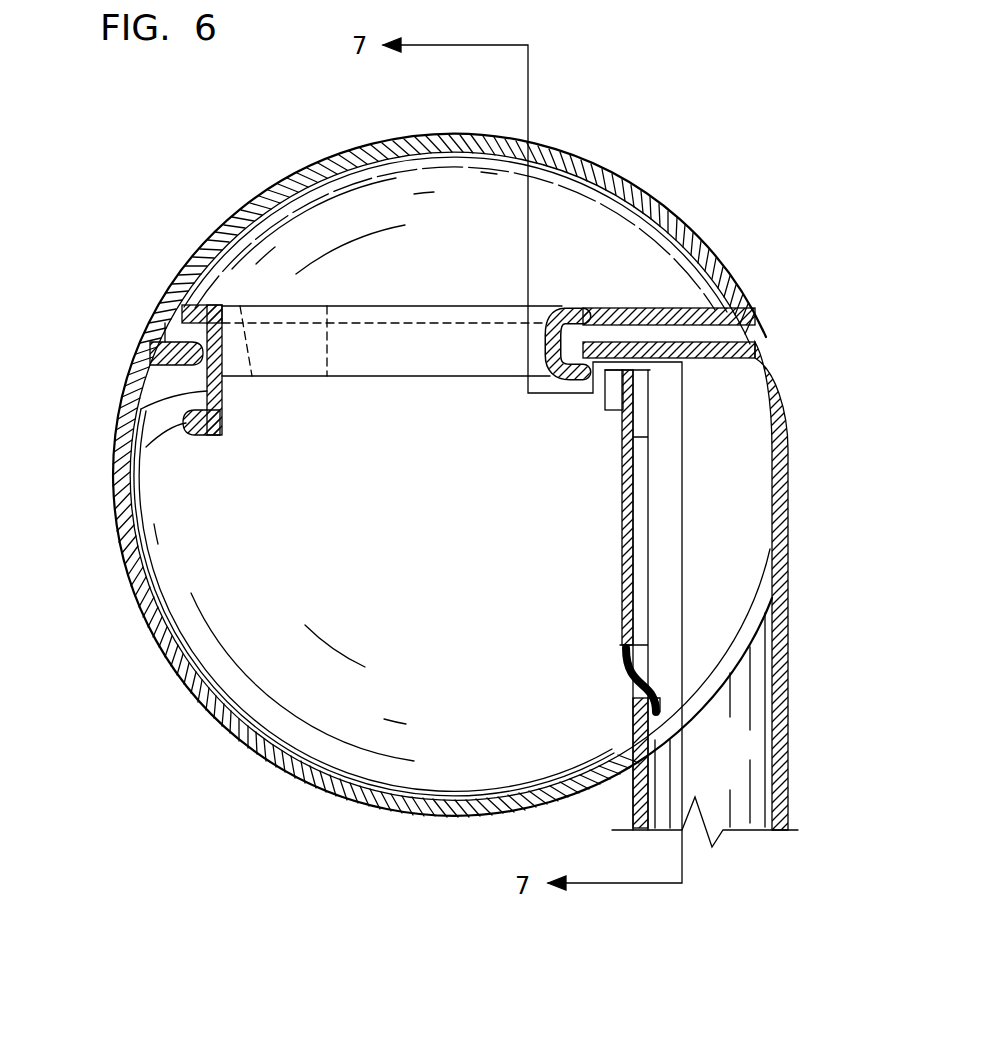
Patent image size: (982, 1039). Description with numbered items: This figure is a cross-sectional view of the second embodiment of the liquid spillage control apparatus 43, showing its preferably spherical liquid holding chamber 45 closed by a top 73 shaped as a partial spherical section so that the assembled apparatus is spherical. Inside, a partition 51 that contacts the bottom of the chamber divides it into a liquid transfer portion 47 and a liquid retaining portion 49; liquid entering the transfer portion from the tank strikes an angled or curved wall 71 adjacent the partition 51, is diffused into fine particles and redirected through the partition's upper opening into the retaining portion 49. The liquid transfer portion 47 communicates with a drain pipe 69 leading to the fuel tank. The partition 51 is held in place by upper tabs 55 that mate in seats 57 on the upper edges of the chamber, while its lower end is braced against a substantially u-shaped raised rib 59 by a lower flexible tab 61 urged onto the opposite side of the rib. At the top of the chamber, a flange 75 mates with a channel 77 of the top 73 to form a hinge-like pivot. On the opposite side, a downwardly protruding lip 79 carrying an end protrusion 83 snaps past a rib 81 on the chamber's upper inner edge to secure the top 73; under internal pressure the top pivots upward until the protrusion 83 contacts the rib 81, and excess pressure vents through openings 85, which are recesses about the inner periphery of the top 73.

The liquid spillage control apparatus 43 is at (157, 712).
The liquid holding chamber 45 is at (342, 797).
The liquid transfer portion 47 is at (753, 438).
The liquid retaining portion 49 is at (184, 562).
The partition 51 is at (623, 597).
The upper tabs 55 is at (623, 422).
The seats 57 is at (605, 403).
The raised rib 59 is at (638, 567).
The lower flexible tab 61 is at (658, 703).
The drain pipe 69 is at (760, 780).
The wall 71 is at (767, 368).
The top 73 is at (405, 137).
The flange 75 is at (591, 315).
The channel 77 is at (622, 337).
The lip 79 is at (198, 390).
The rib 81 is at (150, 338).
The protrusion 83 is at (183, 428).
The openings 85 is at (282, 343).